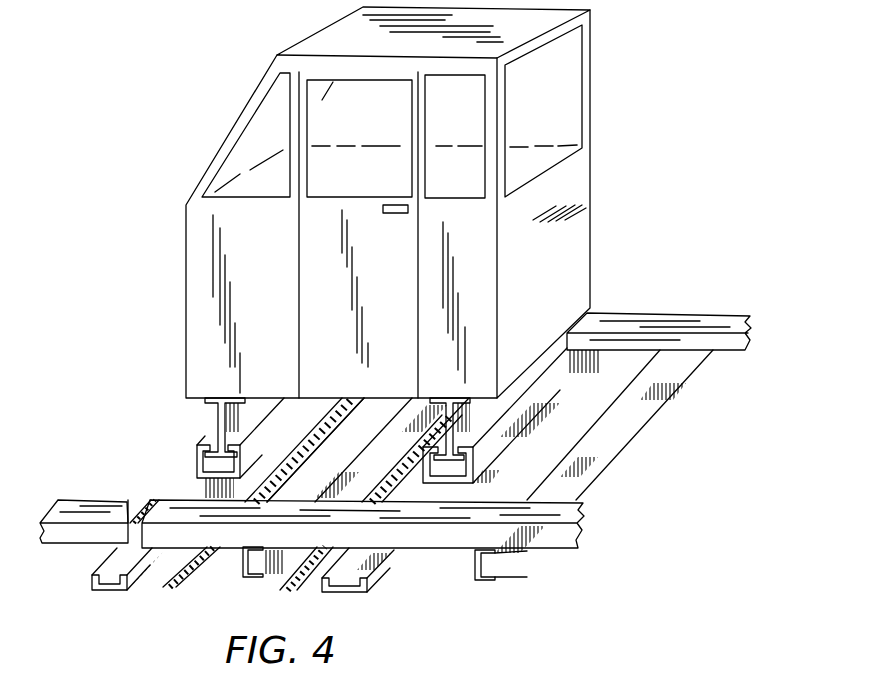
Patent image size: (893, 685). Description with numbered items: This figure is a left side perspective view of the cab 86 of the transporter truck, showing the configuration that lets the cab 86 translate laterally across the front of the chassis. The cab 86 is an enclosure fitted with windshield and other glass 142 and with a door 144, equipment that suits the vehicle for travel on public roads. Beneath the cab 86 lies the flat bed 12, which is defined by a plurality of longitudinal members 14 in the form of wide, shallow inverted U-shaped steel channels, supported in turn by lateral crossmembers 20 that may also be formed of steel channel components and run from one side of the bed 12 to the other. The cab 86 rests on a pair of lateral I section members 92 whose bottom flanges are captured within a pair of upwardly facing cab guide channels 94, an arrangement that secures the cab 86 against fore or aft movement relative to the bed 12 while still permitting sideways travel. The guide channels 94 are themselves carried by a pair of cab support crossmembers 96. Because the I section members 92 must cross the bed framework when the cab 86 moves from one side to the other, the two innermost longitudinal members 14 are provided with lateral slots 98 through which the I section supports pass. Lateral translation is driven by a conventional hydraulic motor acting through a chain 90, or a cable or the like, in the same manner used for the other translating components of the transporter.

The bed 12 is at (438, 588).
The longitudinal members 14 is at (687, 312).
The lateral crossmembers 20 is at (373, 466).
The cab 86 is at (592, 207).
The chain 90 is at (272, 582).
The lateral I section members 92 is at (217, 419).
The cab guide channels 94 is at (200, 447).
The cab support crossmembers 96 is at (90, 577).
The lateral slots 98 is at (155, 507).
The windshield and other glass 142 is at (322, 100).
The door 144 is at (407, 271).